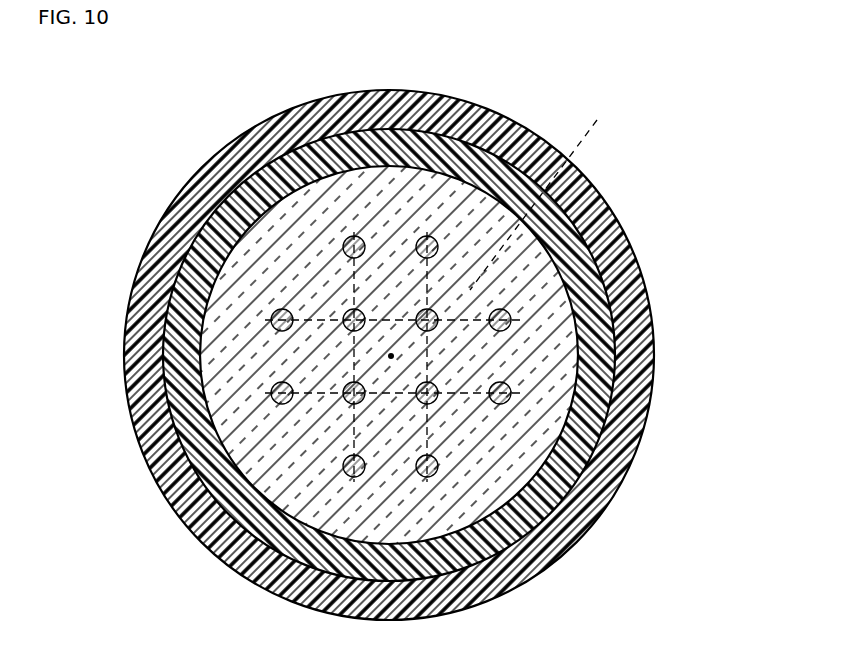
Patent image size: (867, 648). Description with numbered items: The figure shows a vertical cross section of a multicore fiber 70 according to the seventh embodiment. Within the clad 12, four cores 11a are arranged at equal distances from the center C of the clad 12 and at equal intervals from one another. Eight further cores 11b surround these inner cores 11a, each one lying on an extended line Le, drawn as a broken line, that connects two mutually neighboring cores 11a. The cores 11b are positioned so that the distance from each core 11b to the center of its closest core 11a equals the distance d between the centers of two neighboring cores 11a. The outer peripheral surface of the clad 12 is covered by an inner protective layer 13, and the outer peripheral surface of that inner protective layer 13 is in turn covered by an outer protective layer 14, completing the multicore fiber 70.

The multicore fiber 70 is at (416, 319).
The clad 12 is at (500, 282).
The inner protective layer 13 is at (613, 397).
The outer protective layer 14 is at (641, 348).
The core 11a is at (433, 307).
The core 11b is at (428, 236).
The center of the clad C is at (390, 353).
The extended line Le is at (545, 195).